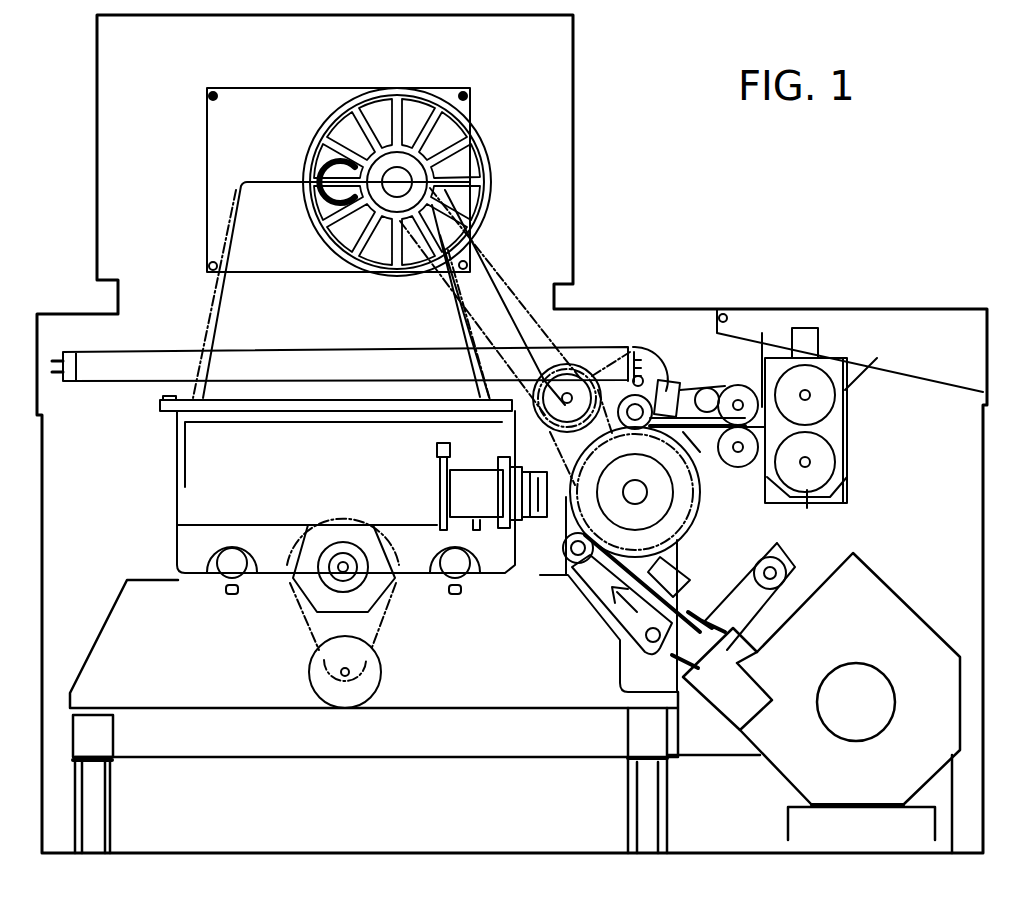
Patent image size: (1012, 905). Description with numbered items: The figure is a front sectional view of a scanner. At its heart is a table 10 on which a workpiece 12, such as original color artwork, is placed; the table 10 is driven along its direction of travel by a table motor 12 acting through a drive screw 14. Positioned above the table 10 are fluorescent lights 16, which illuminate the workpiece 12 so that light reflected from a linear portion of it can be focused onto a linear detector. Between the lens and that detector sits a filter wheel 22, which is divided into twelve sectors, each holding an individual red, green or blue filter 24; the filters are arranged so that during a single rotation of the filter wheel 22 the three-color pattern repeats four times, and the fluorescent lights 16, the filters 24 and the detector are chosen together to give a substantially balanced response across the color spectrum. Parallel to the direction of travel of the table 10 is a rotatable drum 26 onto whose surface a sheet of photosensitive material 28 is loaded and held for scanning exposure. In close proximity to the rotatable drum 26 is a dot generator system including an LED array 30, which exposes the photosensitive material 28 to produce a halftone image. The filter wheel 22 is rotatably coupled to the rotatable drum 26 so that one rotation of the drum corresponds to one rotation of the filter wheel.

The table 10 is at (158, 408).
The workpiece 12 is at (247, 398).
The drive screw 14 is at (333, 578).
The fluorescent lights 16 is at (138, 330).
The filter wheel 22 is at (399, 88).
The filter 24 is at (463, 162).
The rotatable drum 26 is at (698, 520).
The sheet of photosensitive material 28 is at (693, 612).
The LED array 30 is at (438, 450).